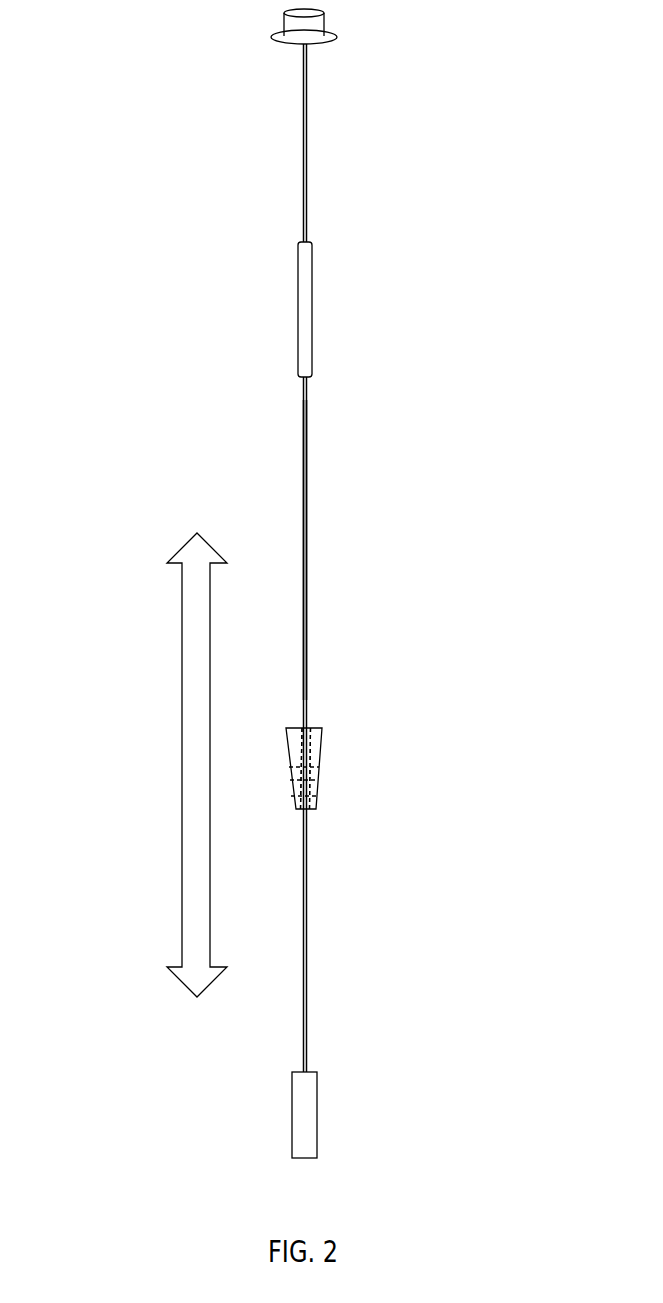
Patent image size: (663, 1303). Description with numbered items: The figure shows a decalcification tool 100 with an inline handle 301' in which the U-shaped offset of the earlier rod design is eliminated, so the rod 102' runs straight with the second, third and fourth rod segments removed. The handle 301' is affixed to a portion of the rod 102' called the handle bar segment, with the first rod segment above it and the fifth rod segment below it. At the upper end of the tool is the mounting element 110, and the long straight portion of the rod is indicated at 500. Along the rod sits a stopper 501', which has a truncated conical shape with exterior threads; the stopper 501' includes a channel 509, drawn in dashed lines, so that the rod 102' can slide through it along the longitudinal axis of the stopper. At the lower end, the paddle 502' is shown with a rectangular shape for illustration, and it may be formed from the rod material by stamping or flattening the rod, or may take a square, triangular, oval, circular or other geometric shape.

The decalcification tool 100 is at (122, 139).
The mounting base / canopy 110 is at (338, 46).
The rod 102' is at (412, 558).
The inline handle 301' is at (390, 318).
The cable 500 is at (326, 564).
The channel 509 is at (310, 739).
The stopper 501' is at (387, 790).
The paddle 502' is at (389, 1115).